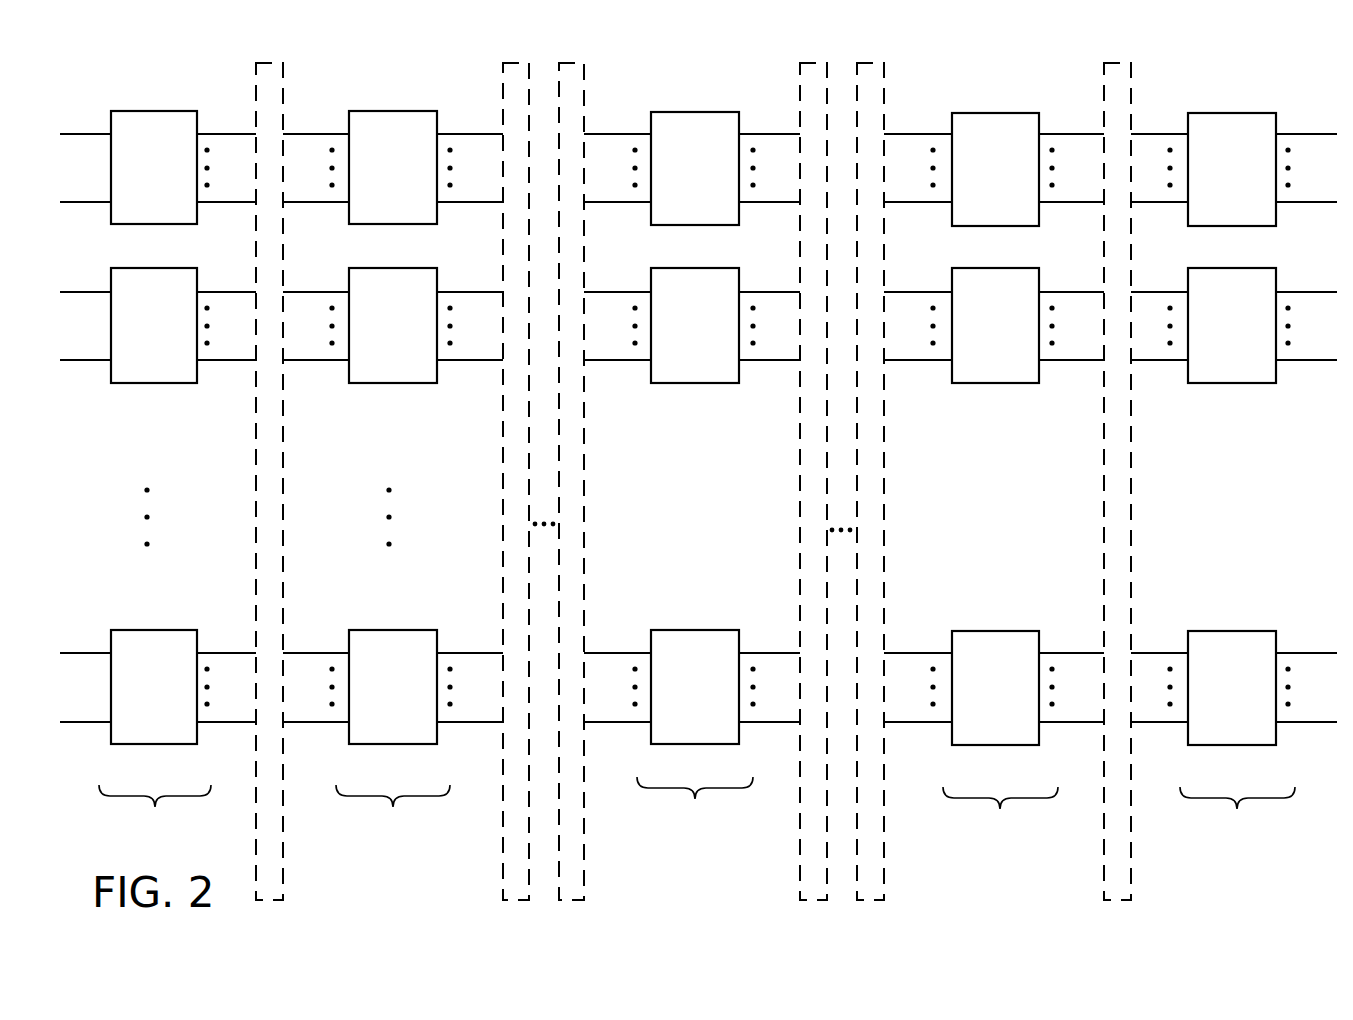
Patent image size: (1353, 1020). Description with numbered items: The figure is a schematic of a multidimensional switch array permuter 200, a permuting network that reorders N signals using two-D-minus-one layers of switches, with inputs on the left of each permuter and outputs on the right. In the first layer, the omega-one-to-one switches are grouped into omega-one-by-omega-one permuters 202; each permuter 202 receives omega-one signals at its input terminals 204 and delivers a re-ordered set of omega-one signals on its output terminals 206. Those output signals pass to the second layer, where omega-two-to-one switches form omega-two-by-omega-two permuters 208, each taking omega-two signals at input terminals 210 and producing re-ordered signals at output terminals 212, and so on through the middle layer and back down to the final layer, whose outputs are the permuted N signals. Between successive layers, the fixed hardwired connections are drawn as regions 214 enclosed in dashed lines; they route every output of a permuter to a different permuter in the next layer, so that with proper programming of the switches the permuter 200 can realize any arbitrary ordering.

The multidimensional switch array permuter 200 is at (698, 473).
The ω1-by-ω1 permuter 202 is at (142, 110).
The input terminals 204 is at (88, 133).
The output terminals 206 is at (215, 133).
The ω2-by-ω2 permuter 208 is at (382, 110).
The input terminals 210 is at (315, 133).
The output terminals 212 is at (460, 133).
The connection regions 214 is at (273, 107).